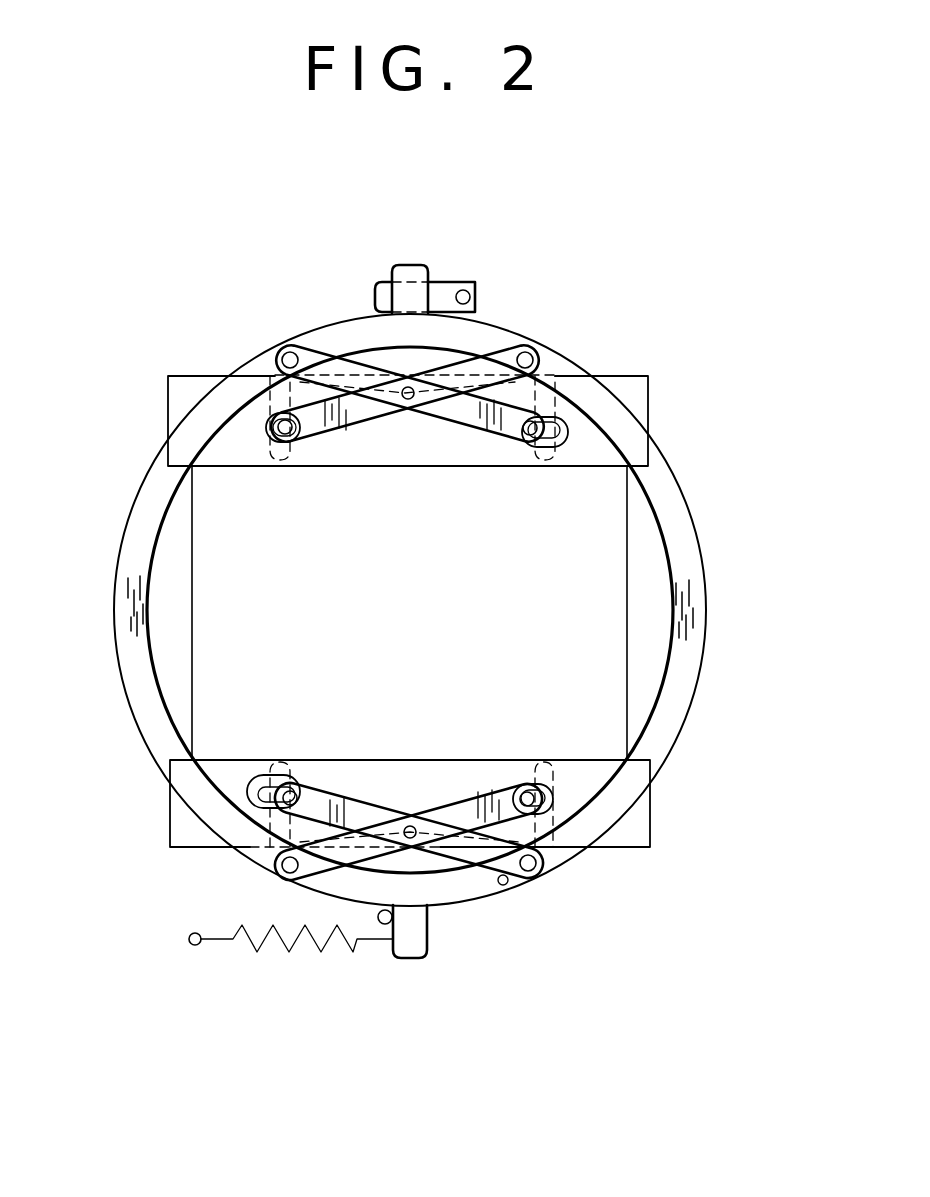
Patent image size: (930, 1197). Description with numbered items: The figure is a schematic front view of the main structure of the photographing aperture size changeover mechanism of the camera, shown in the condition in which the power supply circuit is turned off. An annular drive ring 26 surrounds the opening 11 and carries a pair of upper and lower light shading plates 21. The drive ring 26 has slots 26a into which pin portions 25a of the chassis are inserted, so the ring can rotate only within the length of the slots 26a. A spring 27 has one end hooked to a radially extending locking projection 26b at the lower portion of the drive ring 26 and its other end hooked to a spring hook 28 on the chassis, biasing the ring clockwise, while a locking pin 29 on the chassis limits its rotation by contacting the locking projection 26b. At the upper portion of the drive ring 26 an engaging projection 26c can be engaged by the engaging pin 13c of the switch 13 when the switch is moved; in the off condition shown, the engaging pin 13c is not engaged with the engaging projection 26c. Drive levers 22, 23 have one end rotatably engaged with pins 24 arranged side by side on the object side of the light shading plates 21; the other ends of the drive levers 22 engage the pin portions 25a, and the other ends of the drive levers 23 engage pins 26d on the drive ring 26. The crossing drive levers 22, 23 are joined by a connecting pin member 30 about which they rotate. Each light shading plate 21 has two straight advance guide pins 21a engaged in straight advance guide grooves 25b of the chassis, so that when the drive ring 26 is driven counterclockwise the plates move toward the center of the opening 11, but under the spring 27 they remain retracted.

The opening 11 is at (612, 638).
The switch 13 is at (452, 277).
The engaging pin 13c is at (474, 294).
The light shading plate 21 is at (640, 385).
The straight advance guide pin 21a is at (553, 383).
The drive lever 22 is at (333, 347).
The drive lever 23 is at (500, 347).
The pin 24 is at (286, 437).
The pin portion 25a is at (285, 362).
The straight advance guide groove 25b is at (268, 410).
The drive ring 26 is at (682, 556).
The slot 26a is at (317, 343).
The locking projection 26b is at (403, 960).
The engaging projection 26c is at (413, 265).
The pin 26d is at (540, 343).
The spring 27 is at (287, 952).
The spring hook 28 is at (195, 946).
The locking pin 29 is at (383, 925).
The connecting pin member 30 is at (405, 387).